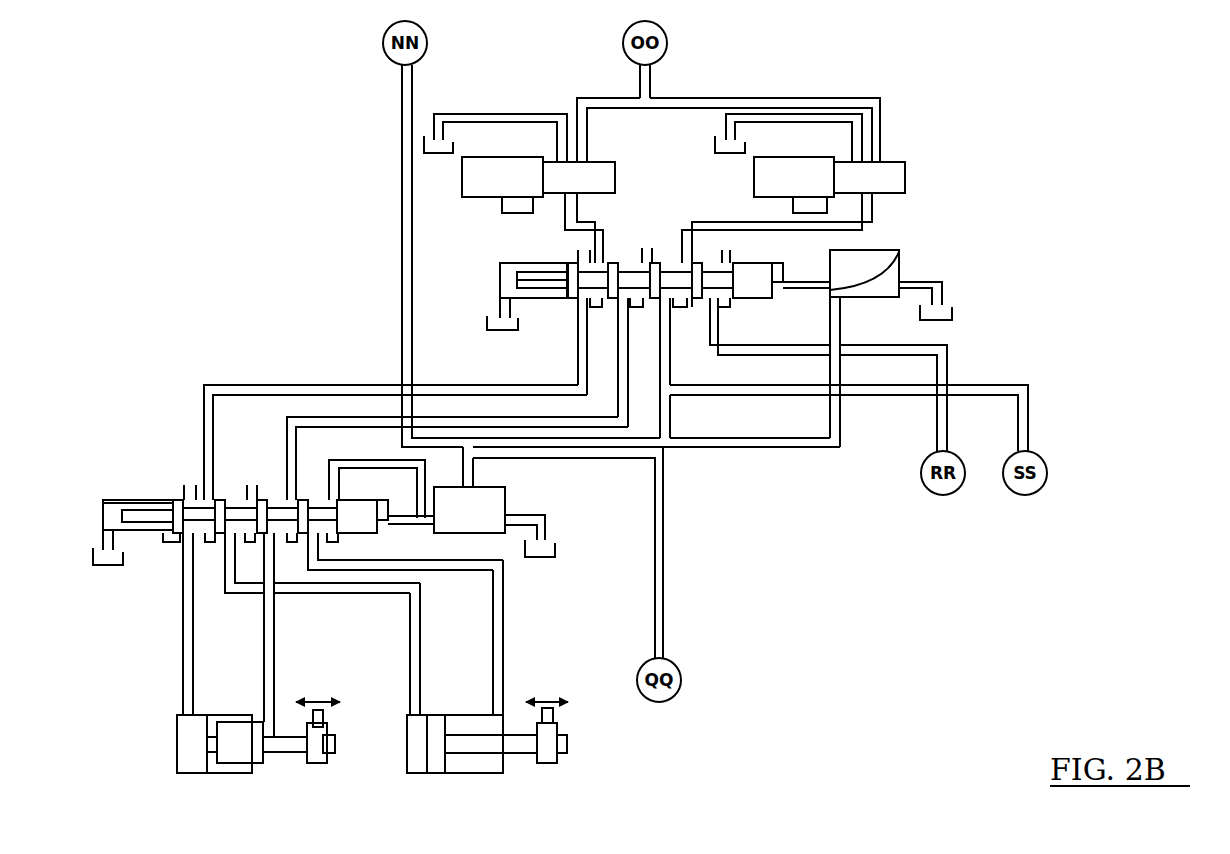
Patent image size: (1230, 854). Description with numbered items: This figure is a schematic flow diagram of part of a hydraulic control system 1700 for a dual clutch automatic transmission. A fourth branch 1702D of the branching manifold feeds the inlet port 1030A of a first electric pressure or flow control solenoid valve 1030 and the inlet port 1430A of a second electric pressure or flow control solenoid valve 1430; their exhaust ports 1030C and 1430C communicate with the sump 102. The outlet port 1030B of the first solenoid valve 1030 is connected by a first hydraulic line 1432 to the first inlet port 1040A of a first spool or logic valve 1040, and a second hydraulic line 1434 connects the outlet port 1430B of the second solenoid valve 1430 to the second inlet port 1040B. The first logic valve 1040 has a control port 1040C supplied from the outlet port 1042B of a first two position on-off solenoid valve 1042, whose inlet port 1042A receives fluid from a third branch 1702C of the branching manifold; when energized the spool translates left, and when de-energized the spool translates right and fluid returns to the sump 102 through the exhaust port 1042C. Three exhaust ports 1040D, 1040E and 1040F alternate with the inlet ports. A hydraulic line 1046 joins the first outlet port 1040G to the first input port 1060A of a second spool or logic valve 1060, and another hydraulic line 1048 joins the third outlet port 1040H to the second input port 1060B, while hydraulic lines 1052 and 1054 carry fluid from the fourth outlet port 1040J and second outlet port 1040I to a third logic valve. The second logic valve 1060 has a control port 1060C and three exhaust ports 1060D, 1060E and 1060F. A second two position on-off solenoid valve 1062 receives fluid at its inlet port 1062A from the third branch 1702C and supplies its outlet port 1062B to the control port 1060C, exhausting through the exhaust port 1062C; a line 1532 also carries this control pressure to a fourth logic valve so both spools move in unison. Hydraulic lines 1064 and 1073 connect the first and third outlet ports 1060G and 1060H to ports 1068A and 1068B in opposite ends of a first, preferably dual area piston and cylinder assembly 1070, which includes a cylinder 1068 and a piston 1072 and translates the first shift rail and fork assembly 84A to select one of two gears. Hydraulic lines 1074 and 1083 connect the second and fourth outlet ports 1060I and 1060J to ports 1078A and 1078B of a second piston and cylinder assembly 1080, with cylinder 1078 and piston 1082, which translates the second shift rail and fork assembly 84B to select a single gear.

The hydraulic control system 1700 is at (185, 156).
The sump 102 is at (430, 148).
The fourth branch of the branching manifold 1702D is at (653, 90).
The third branch of the branching manifold 1702C is at (767, 448).
The first electric pressure or flow control solenoid valve 1030 is at (490, 165).
The inlet port 1030A is at (582, 162).
The outlet port 1030B is at (573, 190).
The exhaust port 1030C is at (563, 158).
The first hydraulic line 1432 is at (568, 230).
The second electric pressure or flow control solenoid valve 1430 is at (850, 162).
The inlet port 1430A is at (870, 162).
The outlet port 1430B is at (862, 193).
The exhaust port 1430C is at (853, 158).
The second hydraulic line 1434 is at (867, 208).
The first spool or logic valve 1040 is at (622, 332).
The first inlet port 1040A is at (605, 255).
The second inlet port 1040B is at (700, 224).
The control port 1040C is at (778, 289).
The exhaust port 1040D is at (577, 253).
The exhaust port 1040E is at (606, 262).
The exhaust port 1040F is at (748, 250).
The first outlet port 1040G is at (582, 294).
The third outlet port 1040H is at (675, 332).
The second outlet port 1040I is at (613, 332).
The fourth outlet port 1040J is at (703, 292).
The first two position solenoid valve 1042 is at (924, 327).
The inlet port 1042A is at (868, 372).
The outlet port 1042B is at (903, 237).
The exhaust port 1042C is at (943, 283).
The hydraulic line 1046 is at (325, 385).
The hydraulic line 1048 is at (287, 432).
The hydraulic line 1052 is at (937, 418).
The hydraulic line 1054 is at (1028, 440).
The second spool or logic valve 1060 is at (296, 556).
The first input port 1060A is at (208, 497).
The second input port 1060B is at (294, 495).
The control port 1060C is at (385, 522).
The exhaust port 1060D is at (184, 489).
The exhaust port 1060E is at (250, 490).
The exhaust port 1060F is at (333, 490).
The first outlet port 1060G is at (190, 535).
The third outlet port 1060H is at (266, 562).
The second outlet port 1060I is at (232, 545).
The fourth outlet port 1060J is at (312, 542).
The second two position solenoid valve 1062 is at (534, 529).
The inlet port 1062A is at (470, 481).
The outlet port 1062B is at (443, 523).
The exhaust port 1062C is at (548, 524).
The hydraulic line 1064 is at (182, 672).
The cylinder 1068 is at (230, 751).
The port 1068A is at (176, 718).
The port 1068B is at (270, 710).
The first piston and cylinder assembly 1070 is at (176, 781).
The piston 1072 is at (240, 754).
The hydraulic line 1073 is at (274, 652).
The hydraulic line 1074 is at (408, 657).
The cylinder 1078 is at (516, 733).
The port 1078A is at (420, 693).
The port 1078B is at (496, 714).
The second piston and cylinder assembly 1080 is at (544, 678).
The piston 1082 is at (431, 754).
The hydraulic line 1083 is at (504, 652).
The first shift rail and fork assembly 84A is at (329, 742).
The second shift rail and fork assembly 84B is at (559, 745).
The line 1532 is at (664, 607).